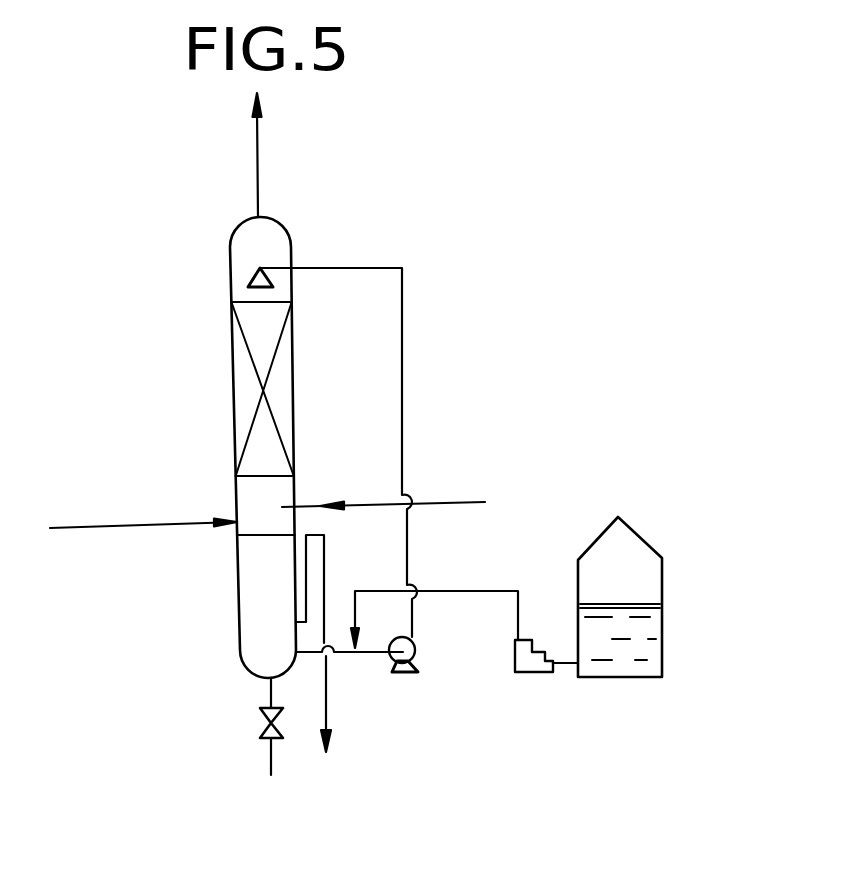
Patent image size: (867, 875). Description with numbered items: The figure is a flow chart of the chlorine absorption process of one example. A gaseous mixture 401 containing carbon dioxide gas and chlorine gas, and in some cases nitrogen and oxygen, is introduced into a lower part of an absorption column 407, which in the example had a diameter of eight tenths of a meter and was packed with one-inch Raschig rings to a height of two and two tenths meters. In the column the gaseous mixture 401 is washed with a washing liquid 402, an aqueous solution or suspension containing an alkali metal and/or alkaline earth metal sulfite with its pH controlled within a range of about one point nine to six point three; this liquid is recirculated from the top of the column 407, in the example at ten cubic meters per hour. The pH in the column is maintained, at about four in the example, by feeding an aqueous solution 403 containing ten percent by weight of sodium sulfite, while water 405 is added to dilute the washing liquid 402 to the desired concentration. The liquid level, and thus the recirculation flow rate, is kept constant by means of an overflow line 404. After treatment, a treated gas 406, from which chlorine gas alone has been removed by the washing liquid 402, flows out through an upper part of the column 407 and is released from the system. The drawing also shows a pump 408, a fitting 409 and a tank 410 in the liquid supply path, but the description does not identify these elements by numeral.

The gaseous mixture 401 is at (135, 522).
The washing liquid 402 is at (370, 264).
The aqueous solution 403 is at (477, 590).
The overflow line 404 is at (327, 687).
The water 405 is at (450, 502).
The treated gas 406 is at (258, 168).
The absorption column 407 is at (253, 613).
The pump 408 is at (415, 650).
The valve fitting 409 is at (532, 672).
The tank 410 is at (648, 642).